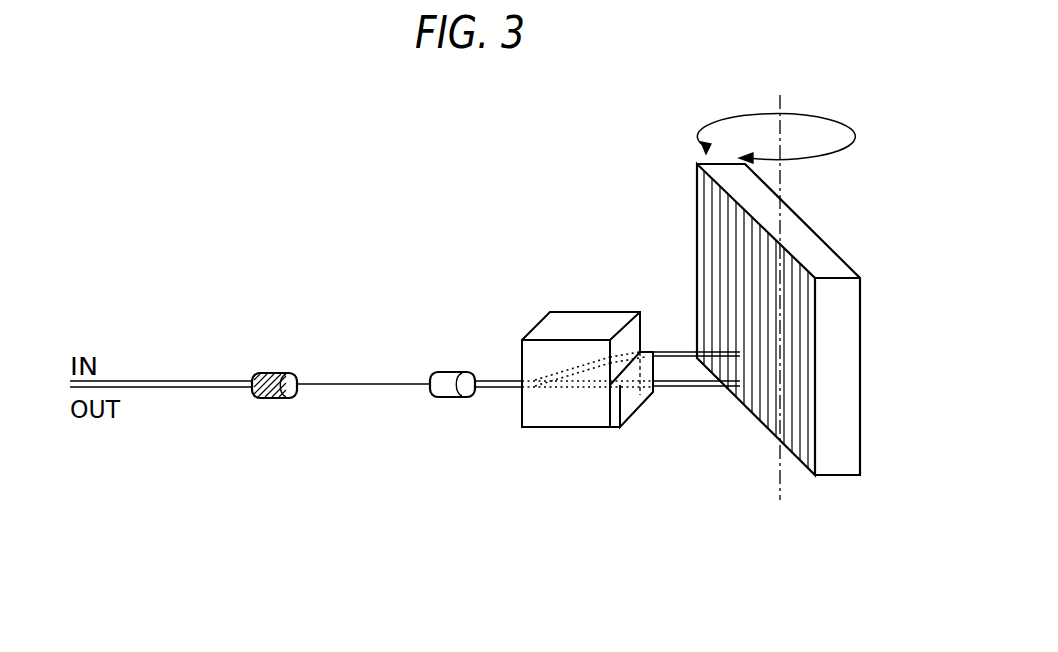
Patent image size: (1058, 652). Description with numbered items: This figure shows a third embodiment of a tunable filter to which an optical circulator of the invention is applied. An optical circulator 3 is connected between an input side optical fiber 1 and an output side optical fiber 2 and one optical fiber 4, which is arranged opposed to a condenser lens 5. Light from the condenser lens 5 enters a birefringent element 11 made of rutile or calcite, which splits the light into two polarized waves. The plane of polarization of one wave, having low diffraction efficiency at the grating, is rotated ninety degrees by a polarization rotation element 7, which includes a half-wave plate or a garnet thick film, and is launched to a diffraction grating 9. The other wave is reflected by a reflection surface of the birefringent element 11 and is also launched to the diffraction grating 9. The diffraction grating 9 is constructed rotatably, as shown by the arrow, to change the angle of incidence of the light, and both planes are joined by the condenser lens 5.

The input side optical fiber 1 is at (170, 380).
The output side optical fiber 2 is at (190, 389).
The optical circulator 3 is at (275, 373).
The optical fiber 4 is at (360, 383).
The condenser lens 5 is at (452, 372).
The polarization rotation element 7 is at (637, 407).
The diffraction grating 9 is at (813, 237).
The birefringent element 11 is at (548, 428).